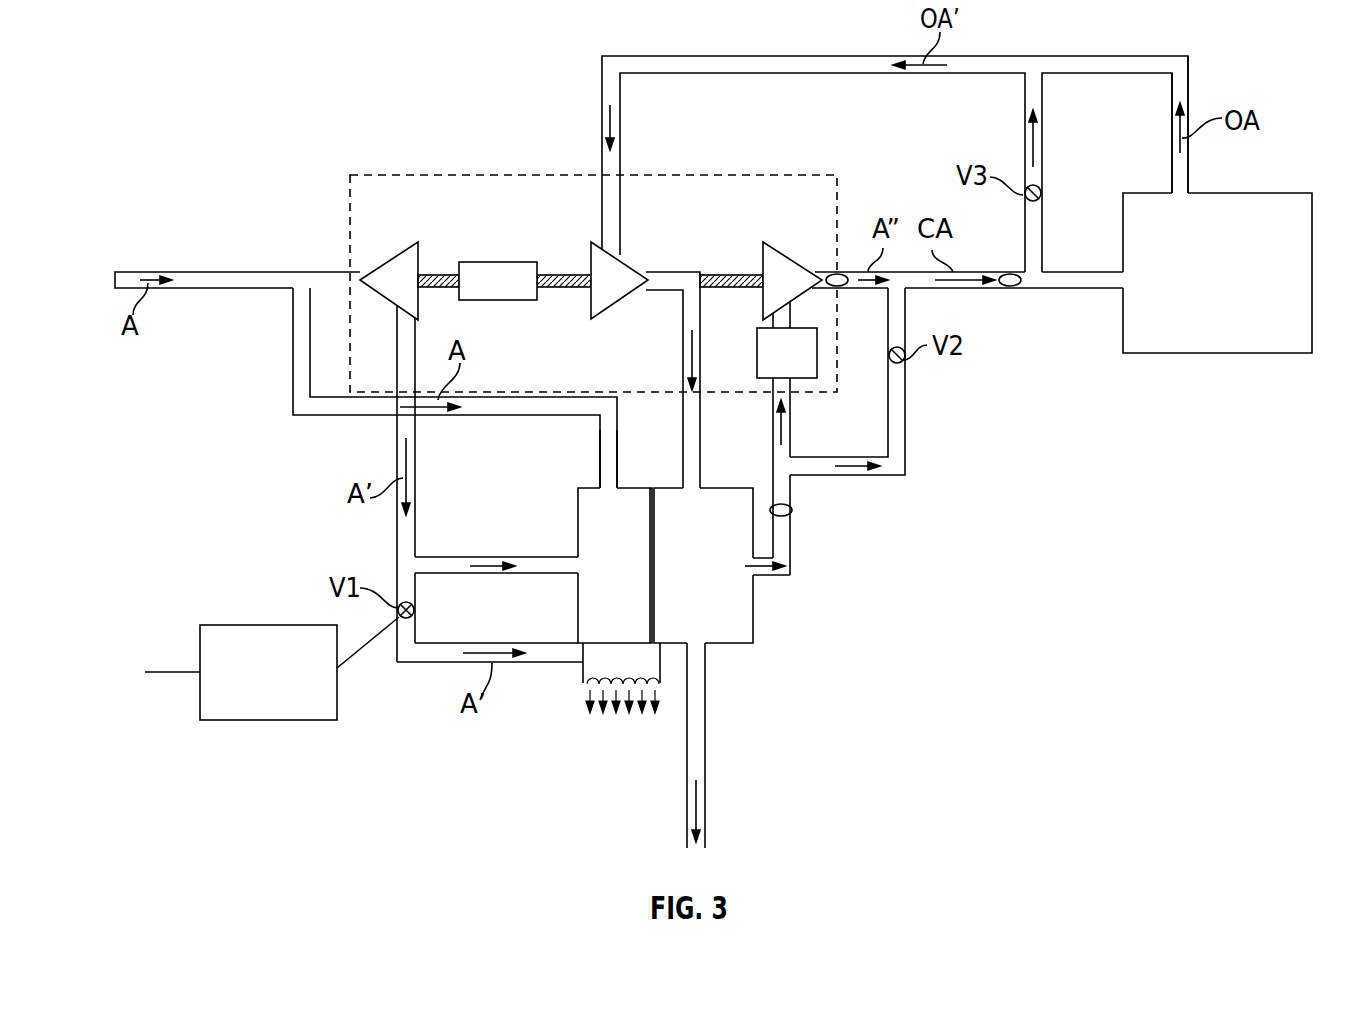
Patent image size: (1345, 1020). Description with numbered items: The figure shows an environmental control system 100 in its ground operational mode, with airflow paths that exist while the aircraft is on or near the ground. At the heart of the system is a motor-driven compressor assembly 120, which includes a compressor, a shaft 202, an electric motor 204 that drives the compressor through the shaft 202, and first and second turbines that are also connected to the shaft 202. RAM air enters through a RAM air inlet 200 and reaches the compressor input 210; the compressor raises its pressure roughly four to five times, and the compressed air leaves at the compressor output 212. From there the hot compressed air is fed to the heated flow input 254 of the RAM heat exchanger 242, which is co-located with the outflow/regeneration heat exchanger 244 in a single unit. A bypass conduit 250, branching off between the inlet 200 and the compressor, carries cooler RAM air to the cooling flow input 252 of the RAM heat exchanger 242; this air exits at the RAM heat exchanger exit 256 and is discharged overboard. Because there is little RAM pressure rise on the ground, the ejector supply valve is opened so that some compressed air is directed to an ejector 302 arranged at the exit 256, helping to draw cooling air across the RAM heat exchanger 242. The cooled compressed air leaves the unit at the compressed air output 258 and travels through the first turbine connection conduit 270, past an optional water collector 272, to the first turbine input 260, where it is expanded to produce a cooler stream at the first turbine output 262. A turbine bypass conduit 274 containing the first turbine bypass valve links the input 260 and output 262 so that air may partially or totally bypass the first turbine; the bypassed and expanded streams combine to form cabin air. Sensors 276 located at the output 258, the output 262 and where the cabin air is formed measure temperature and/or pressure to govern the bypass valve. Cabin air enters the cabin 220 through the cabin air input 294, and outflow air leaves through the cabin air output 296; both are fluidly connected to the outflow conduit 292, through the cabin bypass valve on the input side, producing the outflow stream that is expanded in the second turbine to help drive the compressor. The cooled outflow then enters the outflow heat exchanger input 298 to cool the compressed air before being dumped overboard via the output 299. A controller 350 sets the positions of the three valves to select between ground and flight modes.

The environmental control system 100 is at (150, 78).
The motor-driven compressor assembly 120 is at (450, 175).
The RAM air inlet 200 is at (137, 271).
The shaft 202 is at (428, 275).
The electric motor 204 is at (517, 263).
The compressor input 210 is at (400, 256).
The compressor output 212 is at (405, 315).
The cabin 220 is at (1217, 273).
The RAM heat exchanger 242 is at (615, 565).
The outflow/regeneration heat exchanger 244 is at (703, 565).
The bypass conduit 250 is at (298, 403).
The cooling flow input 252 is at (582, 490).
The heated flow input 254 is at (567, 557).
The RAM heat exchanger exit 256 is at (583, 653).
The compressed air output 258 is at (757, 575).
The first turbine input 260 is at (790, 308).
The first turbine output 262 is at (790, 260).
The first turbine connection conduit 270 is at (792, 483).
The water collector 272 is at (818, 358).
The turbine bypass conduit 274 is at (900, 458).
The sensors 276 is at (840, 272).
The outflow conduit 292 is at (630, 263).
The cabin air input 294 is at (1120, 283).
The cabin air output 296 is at (1190, 193).
The outflow heat exchanger input 298 is at (700, 490).
The output 299 is at (700, 653).
The ejector 302 is at (657, 683).
The controller 350 is at (211, 668).